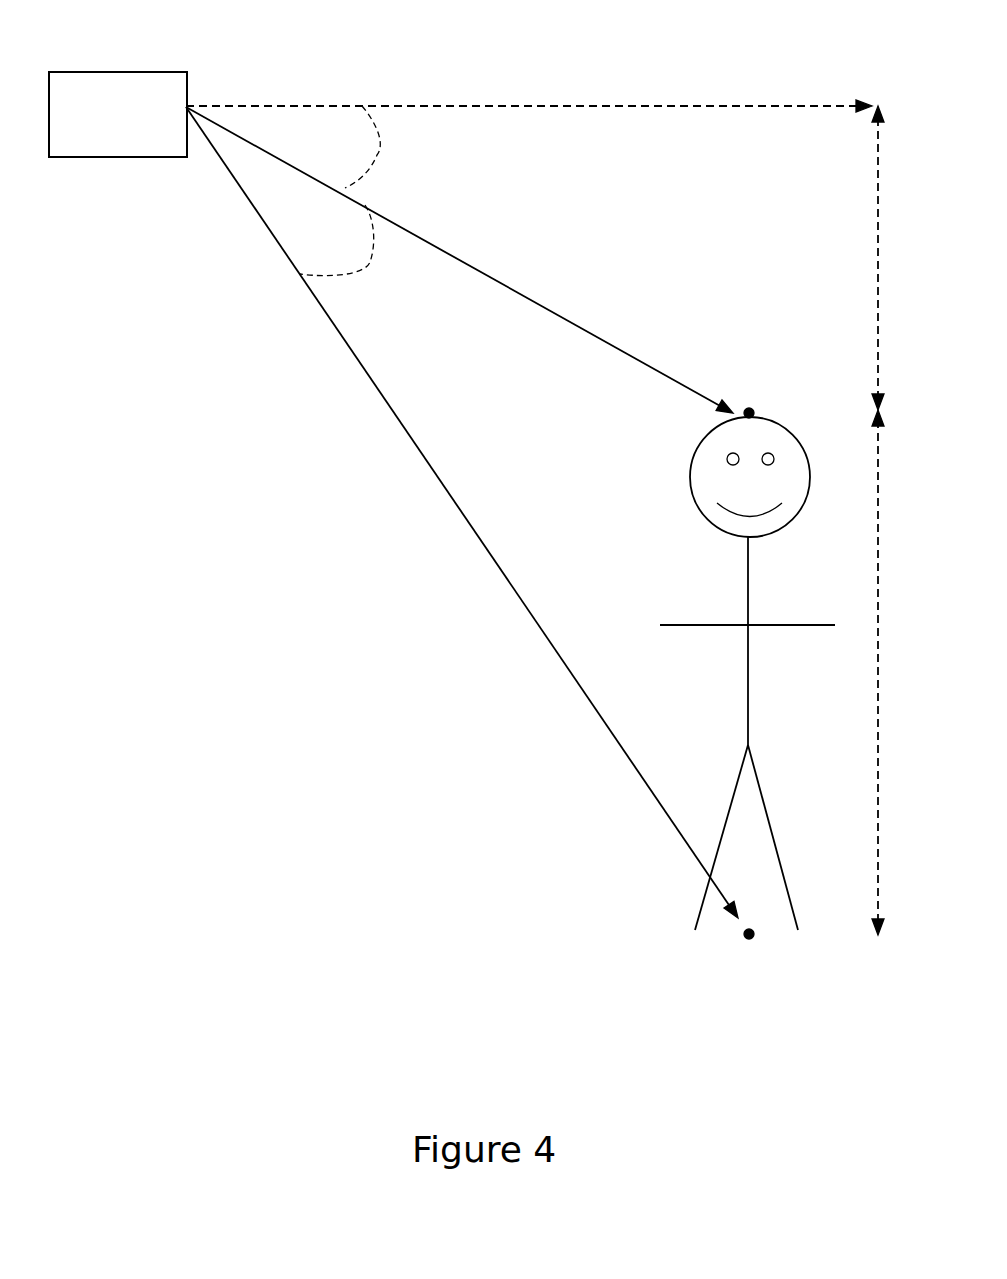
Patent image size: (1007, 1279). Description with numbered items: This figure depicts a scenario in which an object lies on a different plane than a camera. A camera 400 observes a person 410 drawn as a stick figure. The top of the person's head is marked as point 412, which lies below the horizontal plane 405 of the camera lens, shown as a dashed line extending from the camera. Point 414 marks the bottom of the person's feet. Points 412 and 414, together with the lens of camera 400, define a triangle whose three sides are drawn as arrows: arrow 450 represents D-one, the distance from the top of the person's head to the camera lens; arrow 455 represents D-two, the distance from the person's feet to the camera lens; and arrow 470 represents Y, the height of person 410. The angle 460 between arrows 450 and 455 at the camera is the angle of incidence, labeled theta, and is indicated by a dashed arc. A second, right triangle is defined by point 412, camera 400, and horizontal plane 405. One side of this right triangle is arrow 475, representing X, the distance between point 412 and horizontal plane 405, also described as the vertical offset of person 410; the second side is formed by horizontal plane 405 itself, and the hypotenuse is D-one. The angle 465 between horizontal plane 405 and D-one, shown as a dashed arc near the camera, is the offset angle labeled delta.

The camera 400 is at (132, 106).
The horizontal plane 405 is at (498, 100).
The person 410 is at (720, 605).
The point 412 is at (745, 407).
The point 414 is at (745, 938).
The arrow 450 is at (570, 307).
The arrow 455 is at (408, 466).
The angle 460 is at (373, 278).
The angle 465 is at (385, 150).
The arrow 470 is at (858, 906).
The arrow 475 is at (870, 207).